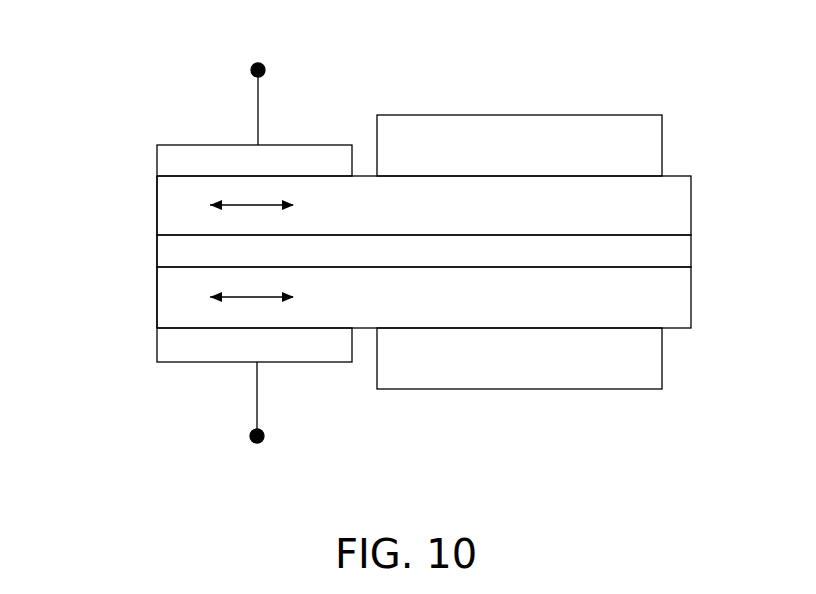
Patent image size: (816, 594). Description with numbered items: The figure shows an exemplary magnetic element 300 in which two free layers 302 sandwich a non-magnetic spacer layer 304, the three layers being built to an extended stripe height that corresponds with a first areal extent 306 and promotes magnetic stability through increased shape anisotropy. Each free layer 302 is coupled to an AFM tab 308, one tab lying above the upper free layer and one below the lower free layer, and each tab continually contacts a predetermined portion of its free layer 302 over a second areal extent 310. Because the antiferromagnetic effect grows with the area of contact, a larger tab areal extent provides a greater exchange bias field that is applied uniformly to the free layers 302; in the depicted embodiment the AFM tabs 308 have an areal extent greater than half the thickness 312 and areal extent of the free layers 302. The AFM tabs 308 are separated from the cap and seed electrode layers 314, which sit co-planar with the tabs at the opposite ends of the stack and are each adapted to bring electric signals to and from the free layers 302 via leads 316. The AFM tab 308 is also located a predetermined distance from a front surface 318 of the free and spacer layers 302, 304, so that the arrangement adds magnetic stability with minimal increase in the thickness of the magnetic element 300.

The magnetic element 300 is at (130, 54).
The free layer 302 is at (424, 252).
The non-magnetic spacer layer 304 is at (424, 251).
The first areal extent 306 is at (690, 440).
The AFM tab 308 is at (519, 252).
The second areal extent 310 is at (662, 105).
The thickness 312 is at (702, 176).
The cap and seed electrode layers 314 is at (157, 162).
The leads 316 is at (258, 98).
The front surface 318 is at (154, 214).